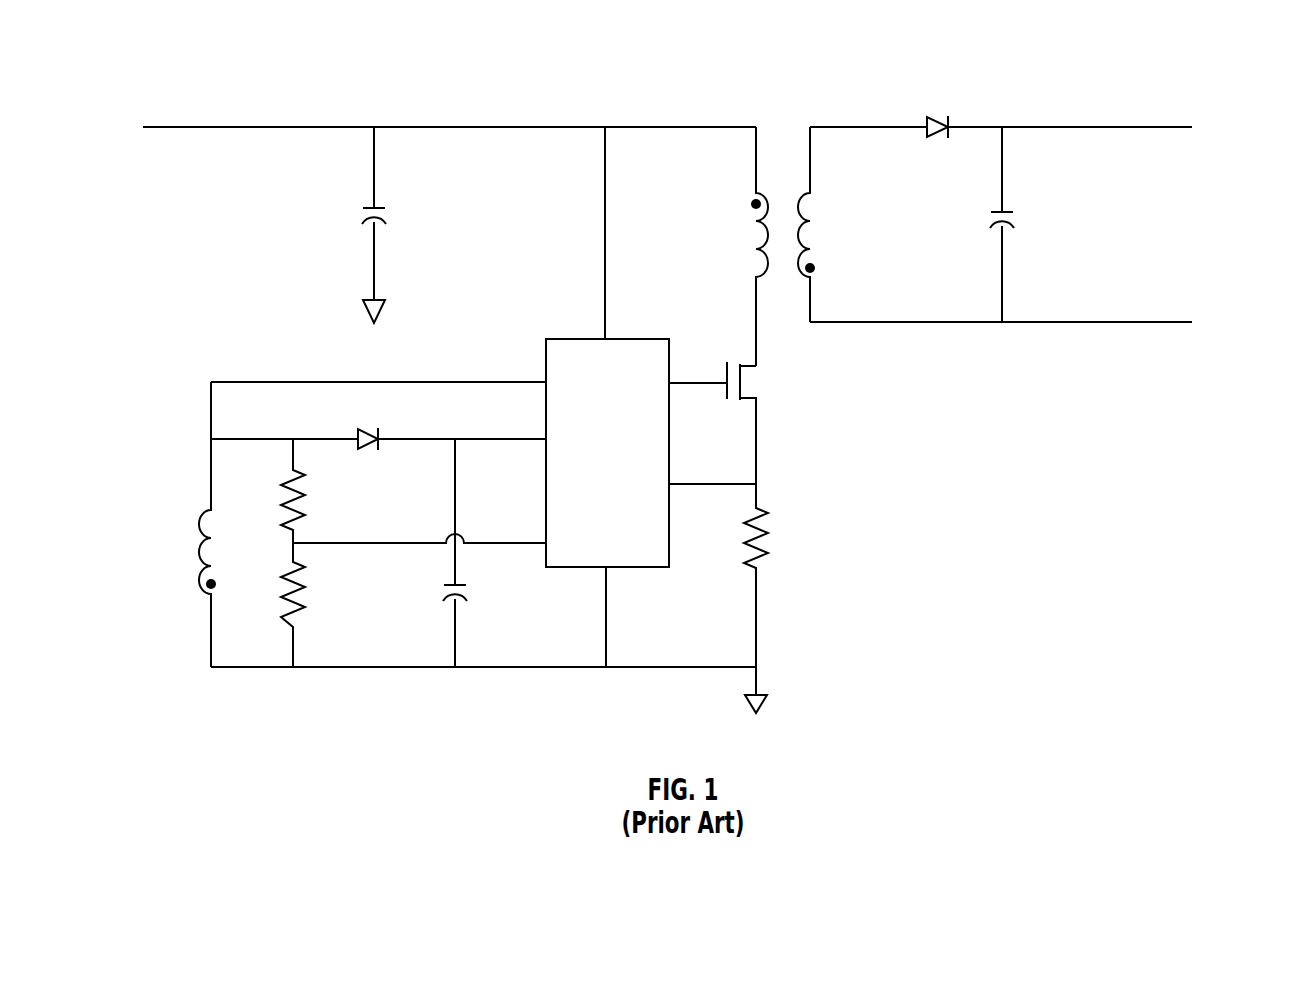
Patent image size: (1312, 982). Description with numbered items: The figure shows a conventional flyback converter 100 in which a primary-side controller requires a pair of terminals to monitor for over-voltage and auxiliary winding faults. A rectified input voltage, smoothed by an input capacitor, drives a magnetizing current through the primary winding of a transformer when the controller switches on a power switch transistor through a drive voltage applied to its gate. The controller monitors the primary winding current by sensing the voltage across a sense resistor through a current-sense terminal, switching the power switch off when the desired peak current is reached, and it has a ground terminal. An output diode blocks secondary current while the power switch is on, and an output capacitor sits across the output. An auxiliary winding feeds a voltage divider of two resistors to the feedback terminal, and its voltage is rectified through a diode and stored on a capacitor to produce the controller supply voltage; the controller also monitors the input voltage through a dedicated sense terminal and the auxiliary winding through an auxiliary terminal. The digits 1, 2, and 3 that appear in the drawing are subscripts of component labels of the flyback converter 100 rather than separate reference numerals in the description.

The flyback converter 100 is at (1219, 76).
The controller U1 1 is at (607, 453).
The output capacitor C2 2 is at (1024, 224).
The feedback capacitor C3 3 is at (435, 553).